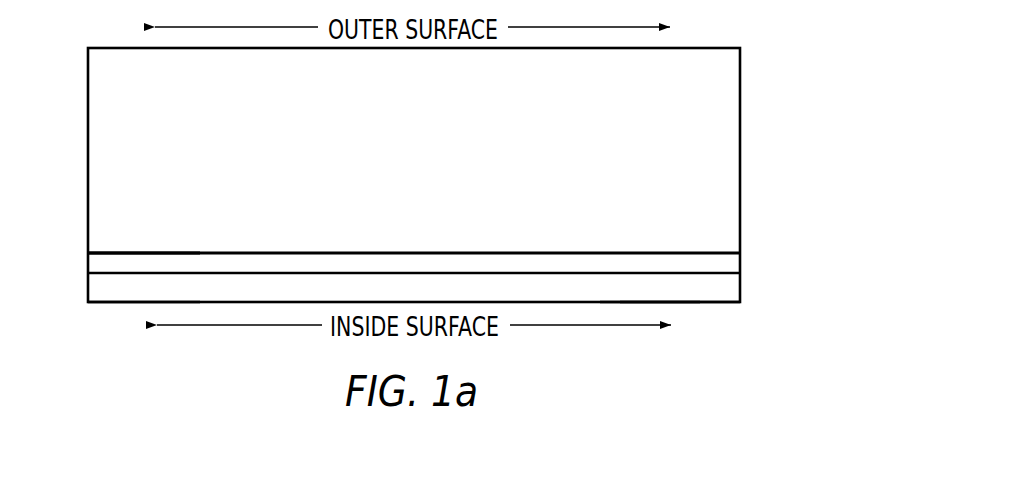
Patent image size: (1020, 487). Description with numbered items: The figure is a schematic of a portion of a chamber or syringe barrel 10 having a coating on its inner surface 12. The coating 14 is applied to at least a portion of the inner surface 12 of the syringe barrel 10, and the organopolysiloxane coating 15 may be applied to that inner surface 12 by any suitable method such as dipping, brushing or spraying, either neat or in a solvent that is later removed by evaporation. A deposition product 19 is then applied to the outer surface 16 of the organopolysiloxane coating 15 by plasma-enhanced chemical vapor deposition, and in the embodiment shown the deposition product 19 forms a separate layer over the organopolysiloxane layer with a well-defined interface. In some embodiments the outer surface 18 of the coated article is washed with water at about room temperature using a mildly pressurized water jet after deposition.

The syringe barrel 10 is at (741, 157).
The inner surface 12 is at (718, 254).
The coating 14 is at (714, 303).
The organopolysiloxane coating 15 is at (95, 262).
The outer surface of the organopolysiloxane coating 16 is at (691, 274).
The outer surface of the coated article 18 is at (690, 303).
The deposition product 19 is at (95, 291).